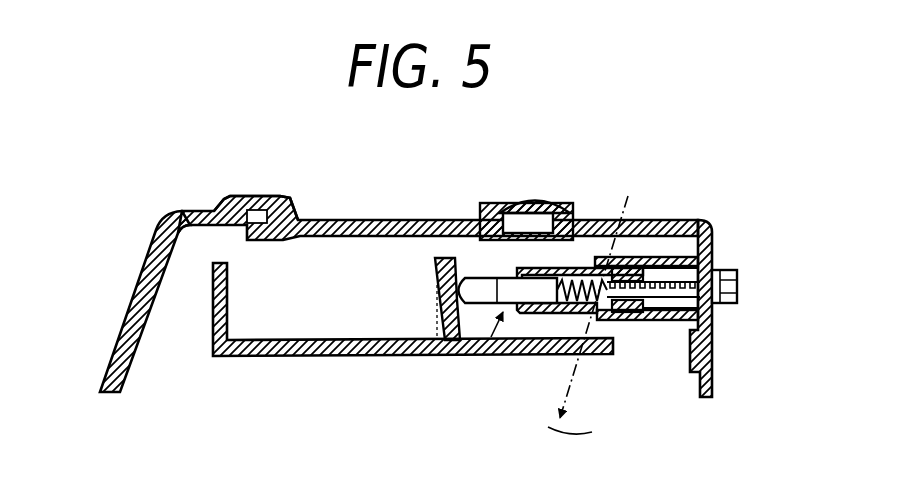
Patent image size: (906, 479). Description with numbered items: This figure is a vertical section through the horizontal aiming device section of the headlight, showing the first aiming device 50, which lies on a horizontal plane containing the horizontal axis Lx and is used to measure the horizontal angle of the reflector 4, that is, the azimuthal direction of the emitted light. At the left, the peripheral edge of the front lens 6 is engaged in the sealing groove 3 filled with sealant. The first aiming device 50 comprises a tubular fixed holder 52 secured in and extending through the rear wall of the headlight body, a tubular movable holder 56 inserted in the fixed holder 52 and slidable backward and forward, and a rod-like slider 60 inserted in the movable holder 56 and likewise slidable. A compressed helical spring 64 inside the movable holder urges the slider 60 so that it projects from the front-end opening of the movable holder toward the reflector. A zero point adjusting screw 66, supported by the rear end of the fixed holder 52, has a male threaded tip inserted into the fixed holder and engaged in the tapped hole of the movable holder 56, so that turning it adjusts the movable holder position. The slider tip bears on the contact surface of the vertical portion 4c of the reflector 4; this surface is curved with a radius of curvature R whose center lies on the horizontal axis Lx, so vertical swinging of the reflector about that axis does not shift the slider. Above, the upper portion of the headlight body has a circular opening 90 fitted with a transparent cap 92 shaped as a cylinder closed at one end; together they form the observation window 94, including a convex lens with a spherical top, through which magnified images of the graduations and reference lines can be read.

The sealing groove 3 is at (258, 208).
The front lens 6 is at (137, 298).
The reflector 4 is at (393, 357).
The vertical portion of the reflector 4c is at (432, 296).
The rod-like slider 60 is at (462, 412).
The compressed helical spring 64 is at (557, 313).
The tubular movable holder 56 is at (577, 315).
The tubular fixed holder 52 is at (658, 322).
The first aiming device 50 is at (664, 254).
The zero point adjusting screw 66 is at (740, 284).
The circular opening 90 is at (508, 203).
The observation window 94 is at (538, 197).
The transparent cap 92 is at (567, 158).
The horizontal axis Lx is at (603, 293).
The radius of curvature R is at (544, 373).